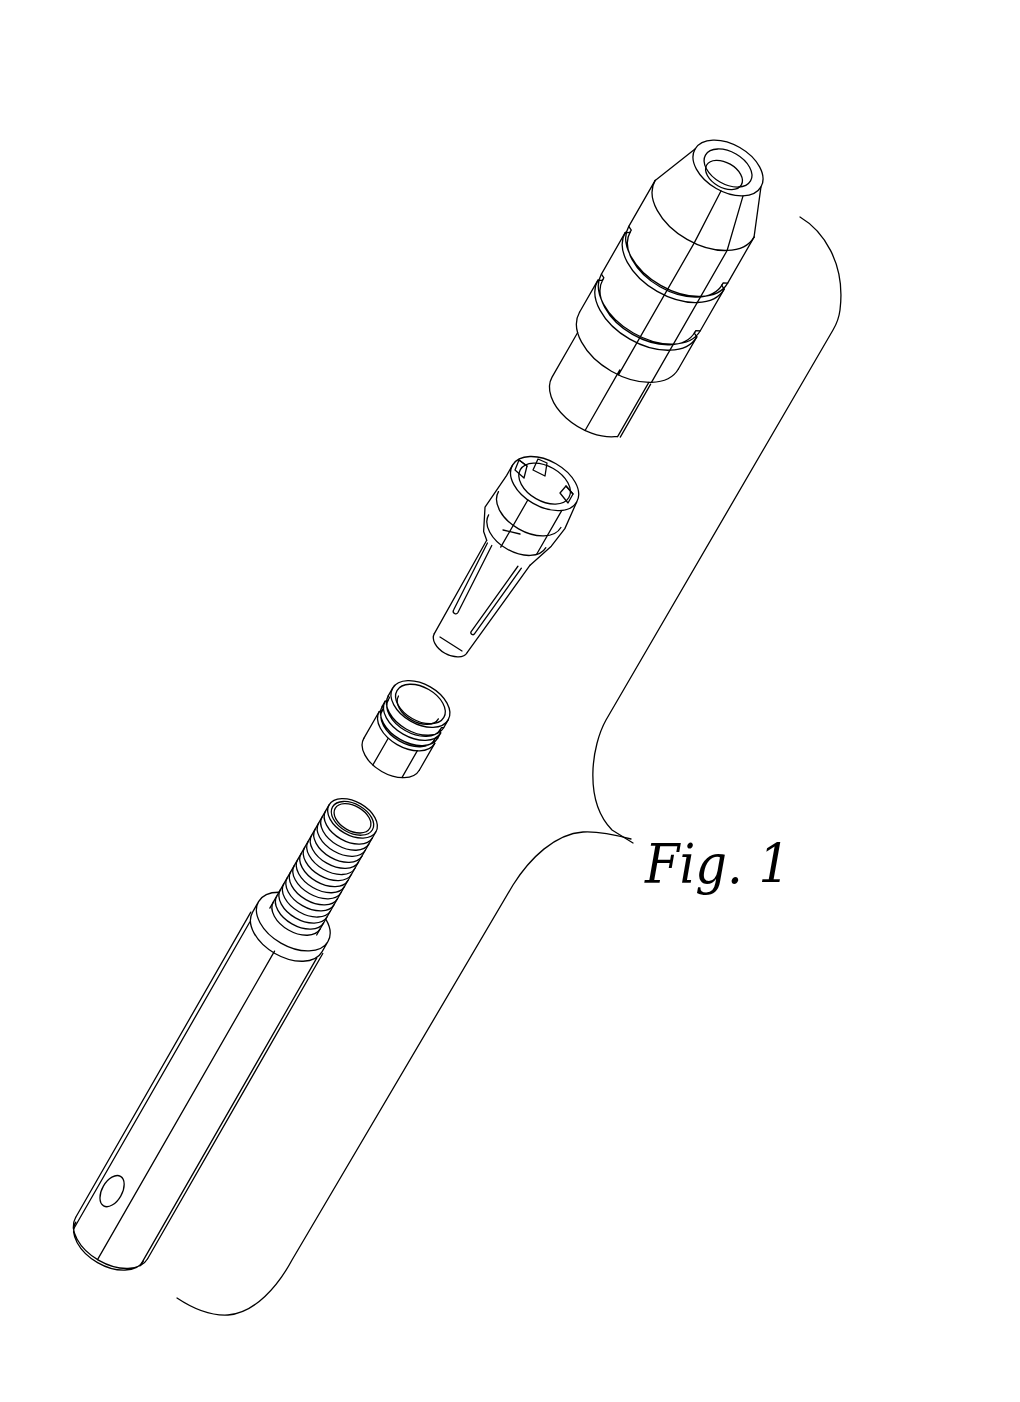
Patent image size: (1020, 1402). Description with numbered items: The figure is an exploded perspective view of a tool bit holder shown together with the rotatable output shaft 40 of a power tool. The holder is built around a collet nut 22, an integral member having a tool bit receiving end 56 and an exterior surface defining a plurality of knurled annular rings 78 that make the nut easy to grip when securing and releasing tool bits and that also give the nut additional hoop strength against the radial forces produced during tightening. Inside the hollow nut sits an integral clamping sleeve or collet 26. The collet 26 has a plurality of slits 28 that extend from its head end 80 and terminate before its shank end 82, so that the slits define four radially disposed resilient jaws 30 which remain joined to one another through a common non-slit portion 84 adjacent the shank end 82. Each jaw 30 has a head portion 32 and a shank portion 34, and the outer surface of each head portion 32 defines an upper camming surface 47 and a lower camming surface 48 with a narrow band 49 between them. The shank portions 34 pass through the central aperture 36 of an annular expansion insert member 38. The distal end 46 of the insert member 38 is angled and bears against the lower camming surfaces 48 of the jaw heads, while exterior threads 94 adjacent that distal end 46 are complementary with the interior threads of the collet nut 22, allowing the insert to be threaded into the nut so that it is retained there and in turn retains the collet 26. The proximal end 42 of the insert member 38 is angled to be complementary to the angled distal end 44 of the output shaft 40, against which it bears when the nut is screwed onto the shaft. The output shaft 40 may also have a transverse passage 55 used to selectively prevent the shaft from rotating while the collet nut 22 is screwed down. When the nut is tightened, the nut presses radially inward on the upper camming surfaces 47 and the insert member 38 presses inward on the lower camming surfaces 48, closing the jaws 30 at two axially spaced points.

The collet nut 22 is at (680, 247).
The tool bit receiving end 56 is at (726, 170).
The annular rings 78 is at (658, 289).
The collet 26 is at (536, 548).
The slits 28 is at (521, 460).
The resilient jaws 30 is at (531, 507).
The head portion 32 is at (518, 529).
The upper camming surface 47 is at (514, 523).
The lower camming surface 48 is at (486, 528).
The narrow band 49 is at (549, 532).
The head end 80 is at (510, 460).
The shank portion 34 is at (484, 591).
The central aperture 36 is at (545, 484).
The common non-slit portion 84 is at (447, 648).
The shank end 82 is at (455, 657).
The expansion insert member 38 is at (436, 744).
The distal end of the expansion insert member 46 is at (420, 704).
The threads 94 is at (406, 728).
The proximal end of the expansion insert member 42 is at (386, 762).
The output shaft 40 is at (261, 1033).
The distal end of the output shaft 44 is at (352, 818).
The transverse passage 55 is at (112, 1190).